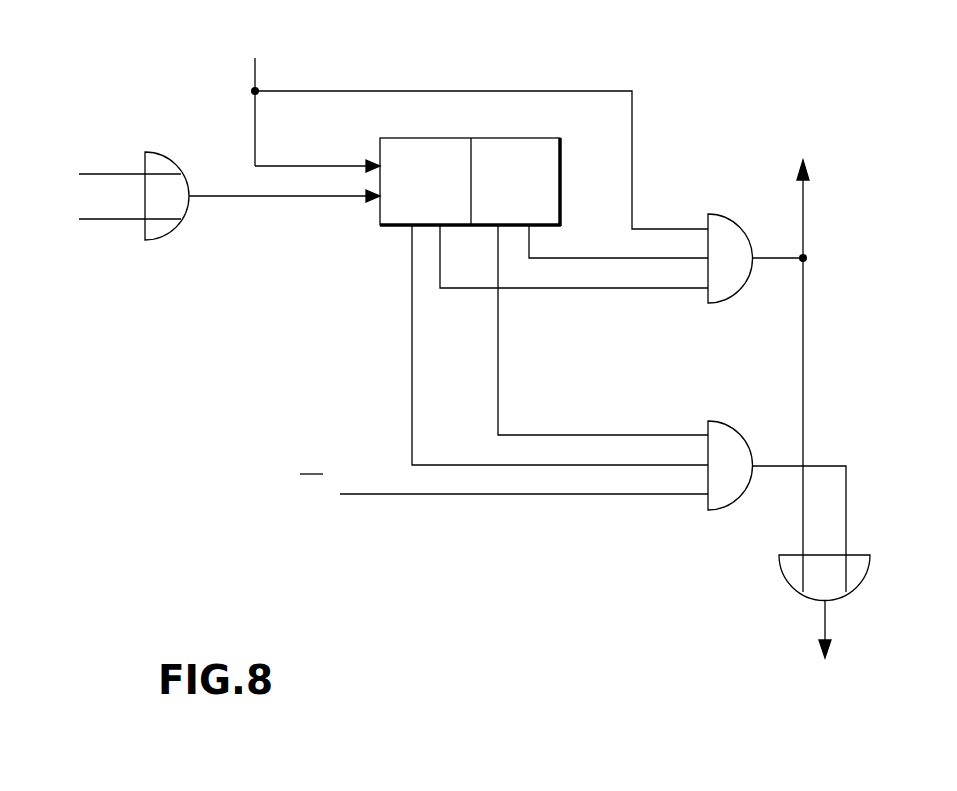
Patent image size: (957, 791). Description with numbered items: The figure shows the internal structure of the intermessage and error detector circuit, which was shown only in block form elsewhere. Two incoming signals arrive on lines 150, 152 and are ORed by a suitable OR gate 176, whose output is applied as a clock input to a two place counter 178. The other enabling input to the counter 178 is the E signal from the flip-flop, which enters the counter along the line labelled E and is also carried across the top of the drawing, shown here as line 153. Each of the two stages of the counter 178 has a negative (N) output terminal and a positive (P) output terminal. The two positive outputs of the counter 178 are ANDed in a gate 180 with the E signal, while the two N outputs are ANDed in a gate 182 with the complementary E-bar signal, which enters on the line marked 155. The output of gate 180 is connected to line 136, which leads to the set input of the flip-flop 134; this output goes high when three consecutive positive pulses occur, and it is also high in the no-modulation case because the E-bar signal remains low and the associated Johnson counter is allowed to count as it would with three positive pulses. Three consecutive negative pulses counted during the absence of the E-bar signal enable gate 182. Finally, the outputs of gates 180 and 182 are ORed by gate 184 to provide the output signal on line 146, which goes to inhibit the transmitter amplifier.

The line 150 is at (112, 173).
The line 152 is at (114, 219).
The enable signal E line 153 is at (258, 75).
The inverted enable signal E-bar line 155 is at (423, 496).
The OR gate 176 is at (186, 155).
The two place counter 178 is at (561, 165).
The gate 180 is at (735, 294).
The gate 182 is at (739, 418).
The gate 184 is at (868, 579).
The line 136 is at (805, 219).
The flip-flop 134 is at (820, 130).
The line 146 is at (830, 628).